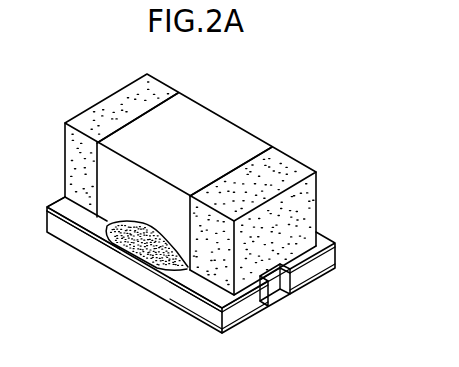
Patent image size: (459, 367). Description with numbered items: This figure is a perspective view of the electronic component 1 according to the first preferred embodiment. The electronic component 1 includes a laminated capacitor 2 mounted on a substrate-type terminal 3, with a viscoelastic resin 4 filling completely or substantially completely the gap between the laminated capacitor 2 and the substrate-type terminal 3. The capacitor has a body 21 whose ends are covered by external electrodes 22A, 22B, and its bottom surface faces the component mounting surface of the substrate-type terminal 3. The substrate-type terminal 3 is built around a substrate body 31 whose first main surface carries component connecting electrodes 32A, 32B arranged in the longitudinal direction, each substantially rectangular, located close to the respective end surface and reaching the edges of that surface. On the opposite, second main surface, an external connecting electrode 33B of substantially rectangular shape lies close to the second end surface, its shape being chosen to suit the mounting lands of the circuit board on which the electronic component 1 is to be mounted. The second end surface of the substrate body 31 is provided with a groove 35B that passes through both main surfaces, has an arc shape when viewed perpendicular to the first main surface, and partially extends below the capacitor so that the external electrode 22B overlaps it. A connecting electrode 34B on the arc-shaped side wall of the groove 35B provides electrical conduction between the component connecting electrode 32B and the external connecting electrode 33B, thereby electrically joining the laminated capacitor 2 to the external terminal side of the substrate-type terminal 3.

The electronic component 1 is at (315, 82).
The laminated capacitor 2 is at (334, 207).
The element body 21 is at (243, 131).
The external electrode 22A is at (108, 106).
The external electrode 22B is at (290, 158).
The substrate-type terminal 3 is at (107, 283).
The substrate body 31 is at (167, 290).
The component connecting electrode 32A is at (61, 200).
The component connecting electrode 32B is at (212, 297).
The external connecting electrode 33B is at (242, 326).
The connecting electrode 34B is at (279, 306).
The groove 35B is at (292, 314).
The viscoelastic resin 4 is at (112, 232).